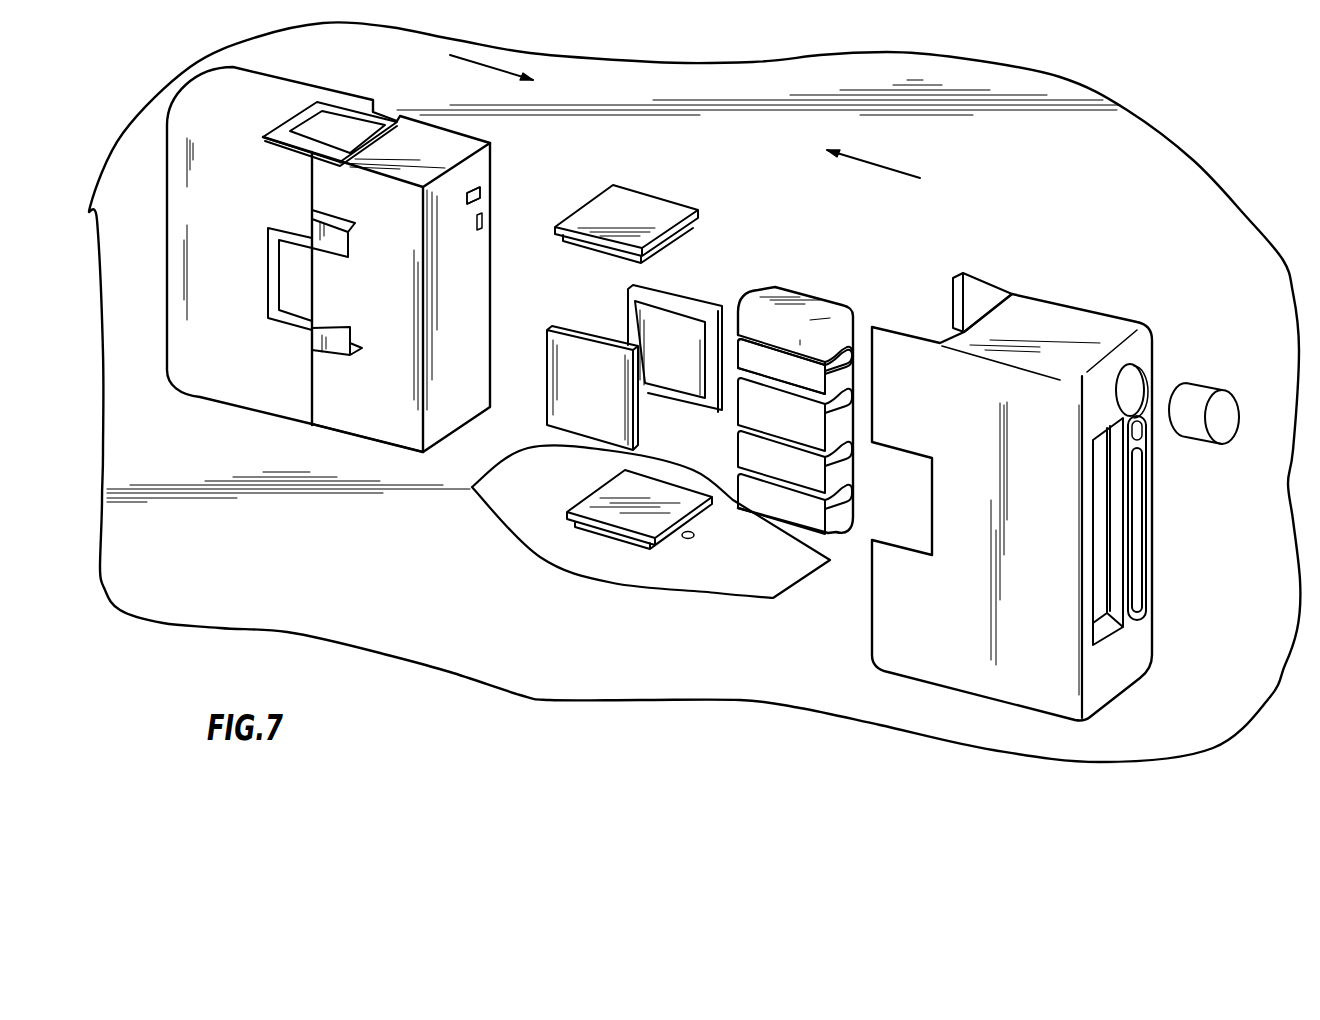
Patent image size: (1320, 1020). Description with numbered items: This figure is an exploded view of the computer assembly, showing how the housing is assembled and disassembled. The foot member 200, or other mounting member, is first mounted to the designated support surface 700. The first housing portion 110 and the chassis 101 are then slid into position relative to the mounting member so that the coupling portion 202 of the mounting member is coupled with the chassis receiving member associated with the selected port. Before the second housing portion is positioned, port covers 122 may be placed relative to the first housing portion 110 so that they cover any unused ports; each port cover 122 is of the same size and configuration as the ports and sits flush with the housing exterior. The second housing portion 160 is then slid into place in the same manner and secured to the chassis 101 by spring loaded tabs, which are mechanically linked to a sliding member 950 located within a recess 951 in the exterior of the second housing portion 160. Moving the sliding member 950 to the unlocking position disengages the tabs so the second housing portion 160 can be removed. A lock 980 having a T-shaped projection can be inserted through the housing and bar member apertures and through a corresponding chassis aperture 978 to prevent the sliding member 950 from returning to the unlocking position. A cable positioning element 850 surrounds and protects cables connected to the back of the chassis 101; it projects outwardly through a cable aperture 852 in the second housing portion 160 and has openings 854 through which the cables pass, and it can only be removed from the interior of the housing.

The support surface 700 is at (597, 672).
The first housing portion 110 is at (252, 288).
The chassis 101 is at (335, 428).
The chassis aperture 978 is at (488, 190).
The port cover 122 is at (640, 222).
The cable positioning element 850 is at (810, 431).
The openings 854 is at (762, 345).
The foot member 200 is at (723, 595).
The coupling portion 202 is at (623, 520).
The second housing portion 160 is at (955, 636).
The recess 951 is at (1137, 432).
The sliding member 950 is at (1137, 517).
The cable aperture 852 is at (1107, 630).
The lock 980 is at (1206, 383).